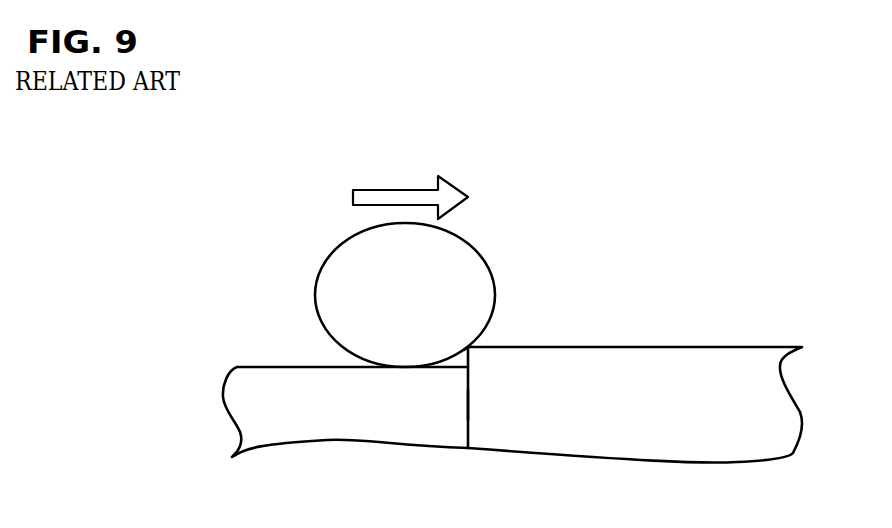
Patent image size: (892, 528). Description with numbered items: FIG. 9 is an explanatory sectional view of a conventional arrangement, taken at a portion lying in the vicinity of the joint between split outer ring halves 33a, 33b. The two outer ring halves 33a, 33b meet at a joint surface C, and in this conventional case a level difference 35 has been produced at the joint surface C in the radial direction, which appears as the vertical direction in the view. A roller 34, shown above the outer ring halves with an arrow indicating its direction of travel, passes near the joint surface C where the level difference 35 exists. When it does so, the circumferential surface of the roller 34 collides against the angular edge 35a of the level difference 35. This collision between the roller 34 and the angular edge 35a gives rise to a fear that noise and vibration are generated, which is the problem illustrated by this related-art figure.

The roller 34 is at (432, 248).
The split outer ring half 33a is at (279, 388).
The split outer ring half 33b is at (740, 362).
The level difference 35 is at (466, 346).
The angular edge 35a is at (469, 347).
The joint surface C is at (470, 405).